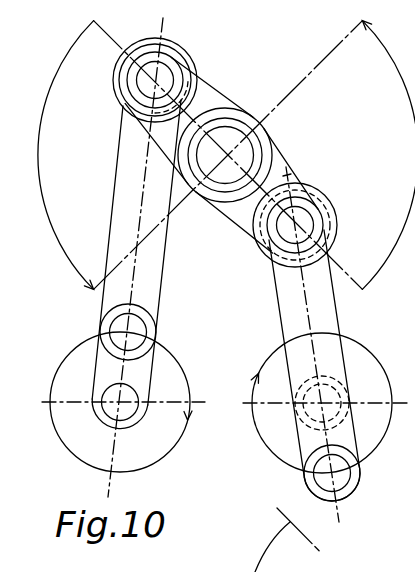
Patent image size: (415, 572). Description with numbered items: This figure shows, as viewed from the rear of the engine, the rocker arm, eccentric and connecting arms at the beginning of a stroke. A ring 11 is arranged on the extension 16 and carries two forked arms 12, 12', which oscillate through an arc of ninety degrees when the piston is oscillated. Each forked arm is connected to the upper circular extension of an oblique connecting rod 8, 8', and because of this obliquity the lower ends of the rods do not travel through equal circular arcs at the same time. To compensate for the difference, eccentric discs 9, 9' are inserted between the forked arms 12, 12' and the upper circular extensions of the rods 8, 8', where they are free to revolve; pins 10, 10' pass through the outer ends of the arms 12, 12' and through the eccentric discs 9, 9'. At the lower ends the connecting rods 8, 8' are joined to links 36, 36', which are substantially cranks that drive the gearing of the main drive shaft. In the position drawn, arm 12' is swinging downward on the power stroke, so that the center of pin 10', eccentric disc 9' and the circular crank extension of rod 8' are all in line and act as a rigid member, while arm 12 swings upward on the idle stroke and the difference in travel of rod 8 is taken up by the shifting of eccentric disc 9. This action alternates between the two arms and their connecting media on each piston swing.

The connecting rod 8 is at (319, 344).
The connecting rod 8' is at (148, 255).
The eccentric disc 9 is at (307, 225).
The eccentric disc 9' is at (164, 75).
The pin 10 is at (319, 229).
The pin 10' is at (187, 80).
The ring 11 is at (258, 127).
The forked arm 12 is at (262, 191).
The forked arm 12' is at (193, 118).
The extension 16 is at (258, 157).
The link 36 is at (294, 438).
The link 36' is at (154, 338).